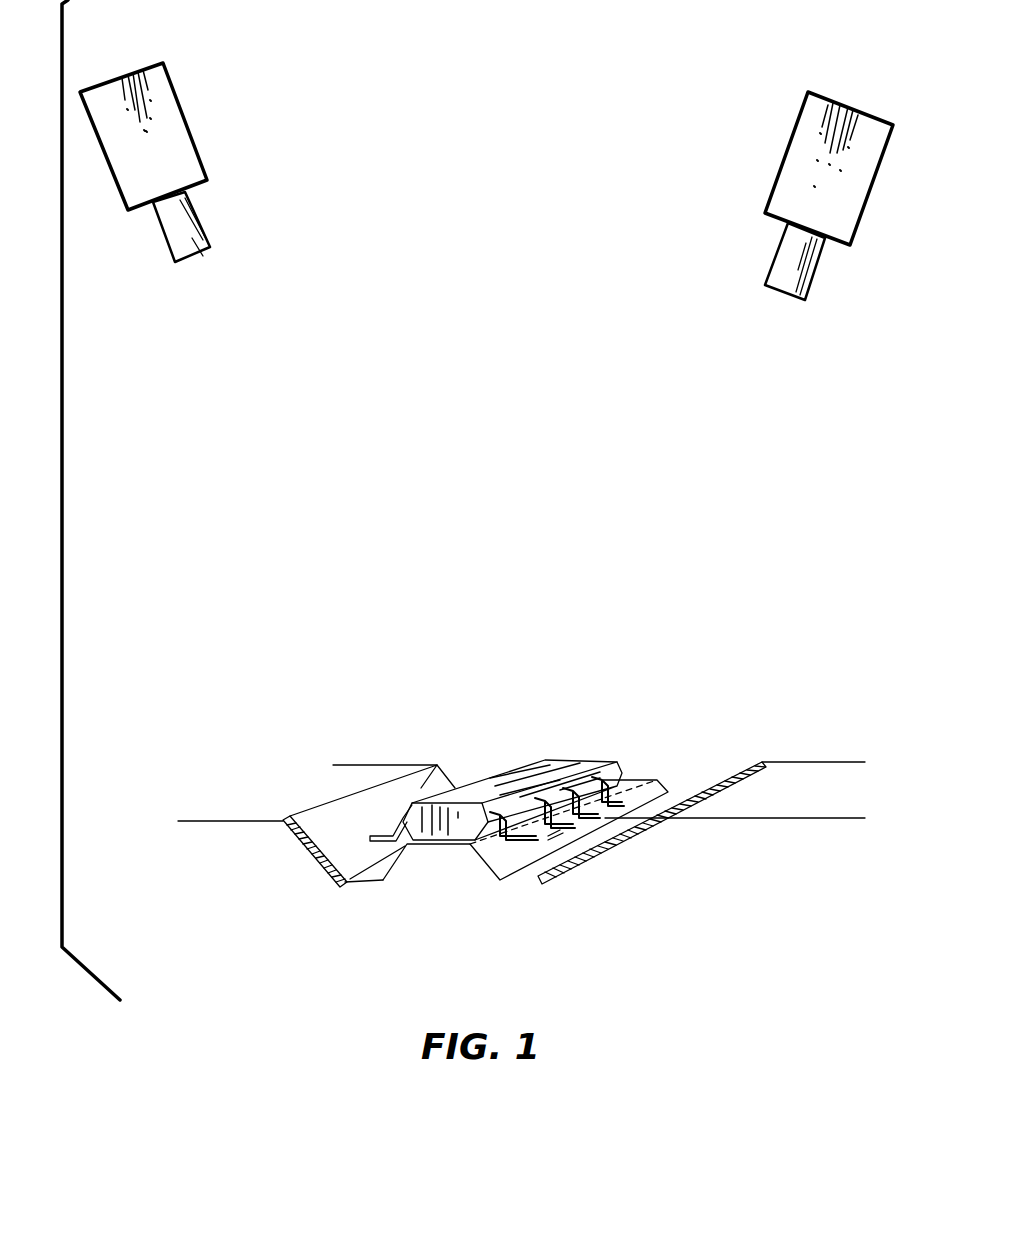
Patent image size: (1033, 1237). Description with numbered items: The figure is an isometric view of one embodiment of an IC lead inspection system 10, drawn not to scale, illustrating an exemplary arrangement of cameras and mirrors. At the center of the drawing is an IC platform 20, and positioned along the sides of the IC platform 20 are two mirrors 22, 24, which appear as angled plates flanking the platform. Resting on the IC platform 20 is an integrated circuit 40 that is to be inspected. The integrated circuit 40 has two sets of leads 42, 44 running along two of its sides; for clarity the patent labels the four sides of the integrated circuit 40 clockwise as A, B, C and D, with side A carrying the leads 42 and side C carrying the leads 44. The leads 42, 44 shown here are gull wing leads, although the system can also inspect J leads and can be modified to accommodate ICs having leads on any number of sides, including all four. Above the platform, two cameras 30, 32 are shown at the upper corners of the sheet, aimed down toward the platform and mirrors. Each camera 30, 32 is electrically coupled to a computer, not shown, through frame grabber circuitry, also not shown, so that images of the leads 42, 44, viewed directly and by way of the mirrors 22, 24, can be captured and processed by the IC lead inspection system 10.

The IC lead inspection system 10 is at (303, 943).
The IC platform 20 is at (493, 855).
The mirror 22 is at (712, 772).
The mirror 24 is at (437, 765).
The camera 30 is at (788, 142).
The camera 32 is at (188, 120).
The integrated circuit 40 is at (580, 765).
The leads 42 is at (580, 845).
The leads 44 is at (373, 845).